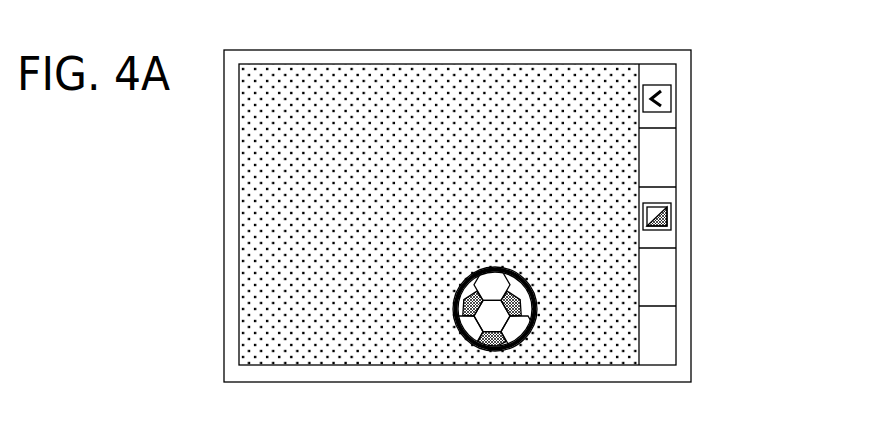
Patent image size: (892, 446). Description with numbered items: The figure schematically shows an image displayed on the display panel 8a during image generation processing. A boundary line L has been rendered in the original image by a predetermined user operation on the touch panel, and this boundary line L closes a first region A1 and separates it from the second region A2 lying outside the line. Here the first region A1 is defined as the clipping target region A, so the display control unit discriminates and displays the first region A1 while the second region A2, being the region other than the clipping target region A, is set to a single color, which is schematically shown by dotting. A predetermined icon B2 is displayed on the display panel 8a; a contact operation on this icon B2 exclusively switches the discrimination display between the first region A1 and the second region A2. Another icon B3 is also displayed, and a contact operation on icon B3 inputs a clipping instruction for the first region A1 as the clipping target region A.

The display panel 8a is at (645, 50).
The second region A2 is at (253, 160).
The icon B2 is at (672, 212).
The icon B3 is at (676, 337).
The boundary line L is at (458, 340).
The first region A1 is at (502, 338).
The clipping target region A is at (502, 338).